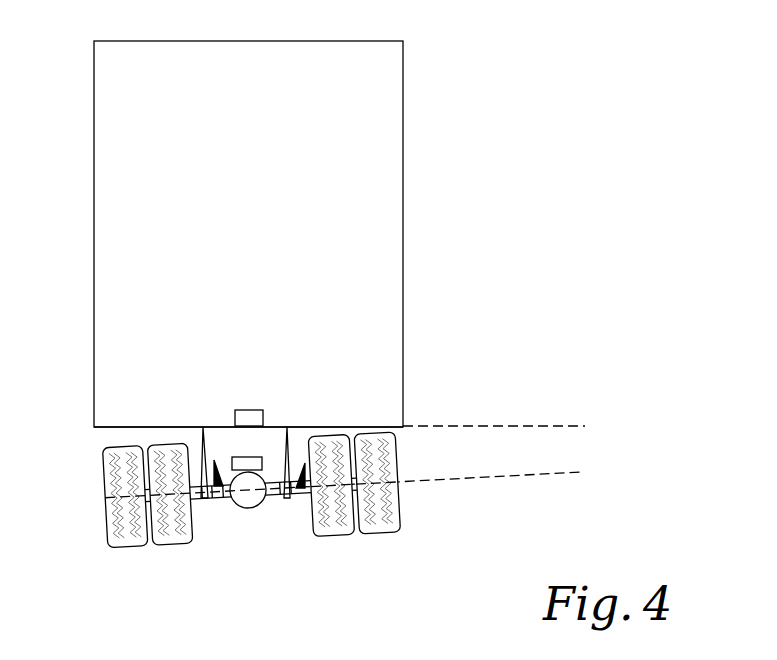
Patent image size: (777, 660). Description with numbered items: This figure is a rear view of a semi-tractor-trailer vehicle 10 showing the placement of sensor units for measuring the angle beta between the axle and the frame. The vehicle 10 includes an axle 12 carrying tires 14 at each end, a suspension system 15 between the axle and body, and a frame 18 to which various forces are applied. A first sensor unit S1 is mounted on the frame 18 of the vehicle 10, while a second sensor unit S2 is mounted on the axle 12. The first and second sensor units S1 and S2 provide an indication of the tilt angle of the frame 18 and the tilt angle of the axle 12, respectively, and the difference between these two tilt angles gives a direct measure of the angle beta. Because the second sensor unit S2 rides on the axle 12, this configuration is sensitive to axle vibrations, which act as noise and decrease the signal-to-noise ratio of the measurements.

The vehicle 10 is at (452, 249).
The axle 12 is at (270, 505).
The tires 14 is at (170, 547).
The suspension system 15 is at (222, 500).
The frame 18 is at (117, 423).
The first sensor unit S1 is at (250, 409).
The second sensor unit S2 is at (253, 457).